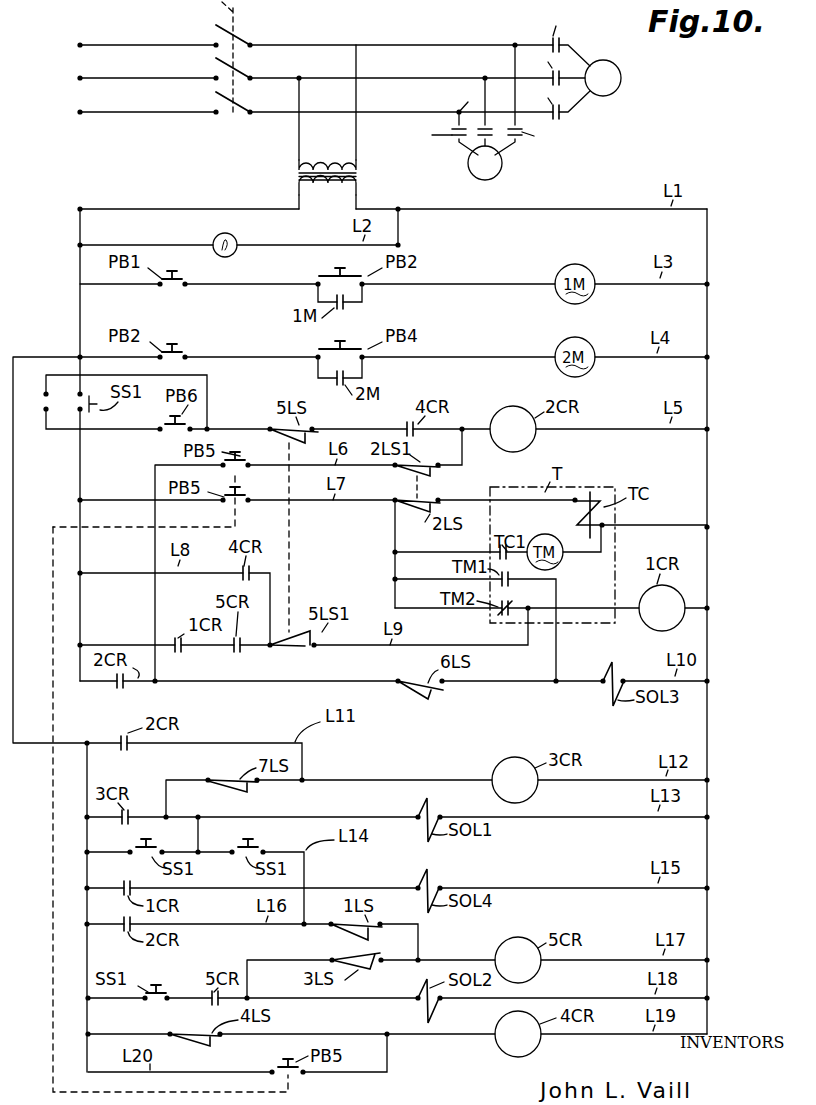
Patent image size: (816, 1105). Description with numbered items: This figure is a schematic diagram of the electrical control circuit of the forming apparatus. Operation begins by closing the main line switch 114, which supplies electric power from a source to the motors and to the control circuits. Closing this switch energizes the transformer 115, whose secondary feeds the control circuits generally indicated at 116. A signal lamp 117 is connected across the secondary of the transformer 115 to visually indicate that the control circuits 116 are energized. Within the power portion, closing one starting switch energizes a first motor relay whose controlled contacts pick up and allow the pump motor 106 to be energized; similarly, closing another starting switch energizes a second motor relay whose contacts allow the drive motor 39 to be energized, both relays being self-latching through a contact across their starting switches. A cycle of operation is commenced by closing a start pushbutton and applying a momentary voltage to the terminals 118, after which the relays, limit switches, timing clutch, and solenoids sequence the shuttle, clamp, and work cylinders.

The main line switch 114 is at (238, 28).
The transformer 115 is at (358, 177).
The control circuits 116 is at (185, 206).
The signal lamp 117 is at (236, 240).
The terminals 118 is at (44, 409).
The drive motor 39 is at (621, 86).
The pump motor 106 is at (502, 166).